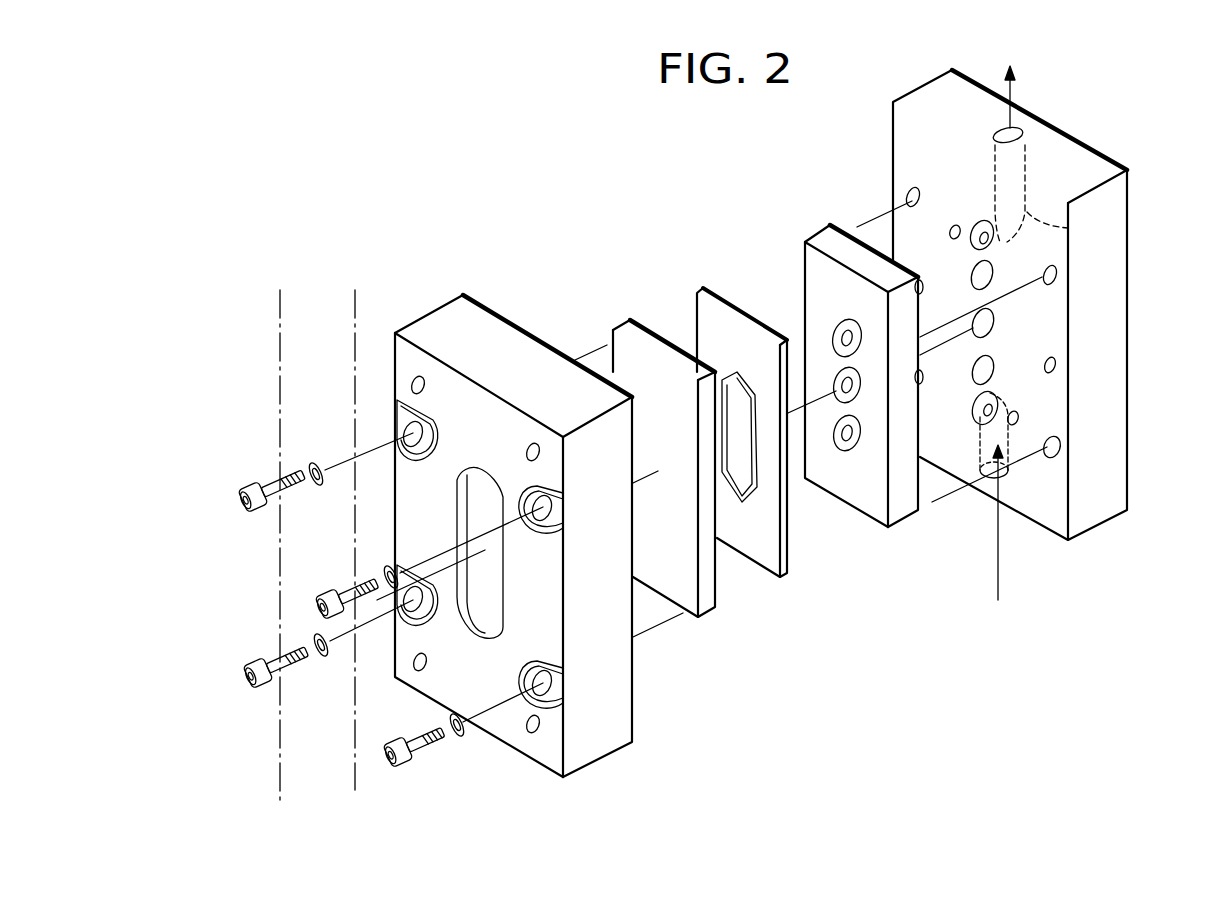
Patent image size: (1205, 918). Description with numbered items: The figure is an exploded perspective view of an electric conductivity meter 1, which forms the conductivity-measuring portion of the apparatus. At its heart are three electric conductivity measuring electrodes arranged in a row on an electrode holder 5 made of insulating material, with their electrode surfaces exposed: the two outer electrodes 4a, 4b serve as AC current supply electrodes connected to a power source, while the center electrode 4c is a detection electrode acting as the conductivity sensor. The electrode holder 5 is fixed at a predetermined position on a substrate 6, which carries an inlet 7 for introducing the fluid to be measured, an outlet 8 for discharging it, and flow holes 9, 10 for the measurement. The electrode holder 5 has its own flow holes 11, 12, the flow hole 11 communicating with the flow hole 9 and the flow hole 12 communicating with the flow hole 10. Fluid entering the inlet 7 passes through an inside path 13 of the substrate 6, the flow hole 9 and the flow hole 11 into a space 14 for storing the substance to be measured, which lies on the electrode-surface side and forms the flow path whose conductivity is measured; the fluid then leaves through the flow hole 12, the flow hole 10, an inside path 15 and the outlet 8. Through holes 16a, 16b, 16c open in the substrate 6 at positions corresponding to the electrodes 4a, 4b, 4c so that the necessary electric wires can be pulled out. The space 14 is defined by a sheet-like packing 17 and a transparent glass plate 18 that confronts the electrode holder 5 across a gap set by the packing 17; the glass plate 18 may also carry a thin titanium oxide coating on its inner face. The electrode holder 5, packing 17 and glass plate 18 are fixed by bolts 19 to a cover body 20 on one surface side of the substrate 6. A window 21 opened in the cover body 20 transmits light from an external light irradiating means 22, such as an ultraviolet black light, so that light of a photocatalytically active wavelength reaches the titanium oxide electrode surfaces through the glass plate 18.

The electric conductivity meter 1 is at (628, 213).
The AC current supply electrode 4a is at (853, 437).
The AC current supply electrode 4b is at (857, 330).
The detection electrode 4c is at (857, 379).
The electrode holder 5 is at (878, 498).
The substrate 6 is at (1026, 305).
The inlet 7 is at (1000, 483).
The outlet 8 is at (1022, 130).
The flow hole 9 is at (984, 410).
The flow hole 10 is at (978, 228).
The flow hole 11 is at (848, 470).
The flow hole 12 is at (846, 300).
The inside path 13 is at (1005, 437).
The space for storing a substance to be measured 14 is at (742, 398).
The inside path 15 is at (1068, 228).
The through hole 16a is at (990, 372).
The through hole 16b is at (990, 281).
The through hole 16c is at (992, 319).
The sheet-like packing 17 is at (760, 550).
The transparent glass plate 18 is at (685, 588).
The bolts 19 is at (412, 733).
The cover body 20 is at (617, 723).
The window 21 is at (476, 507).
The light irradiating means 22 is at (312, 413).